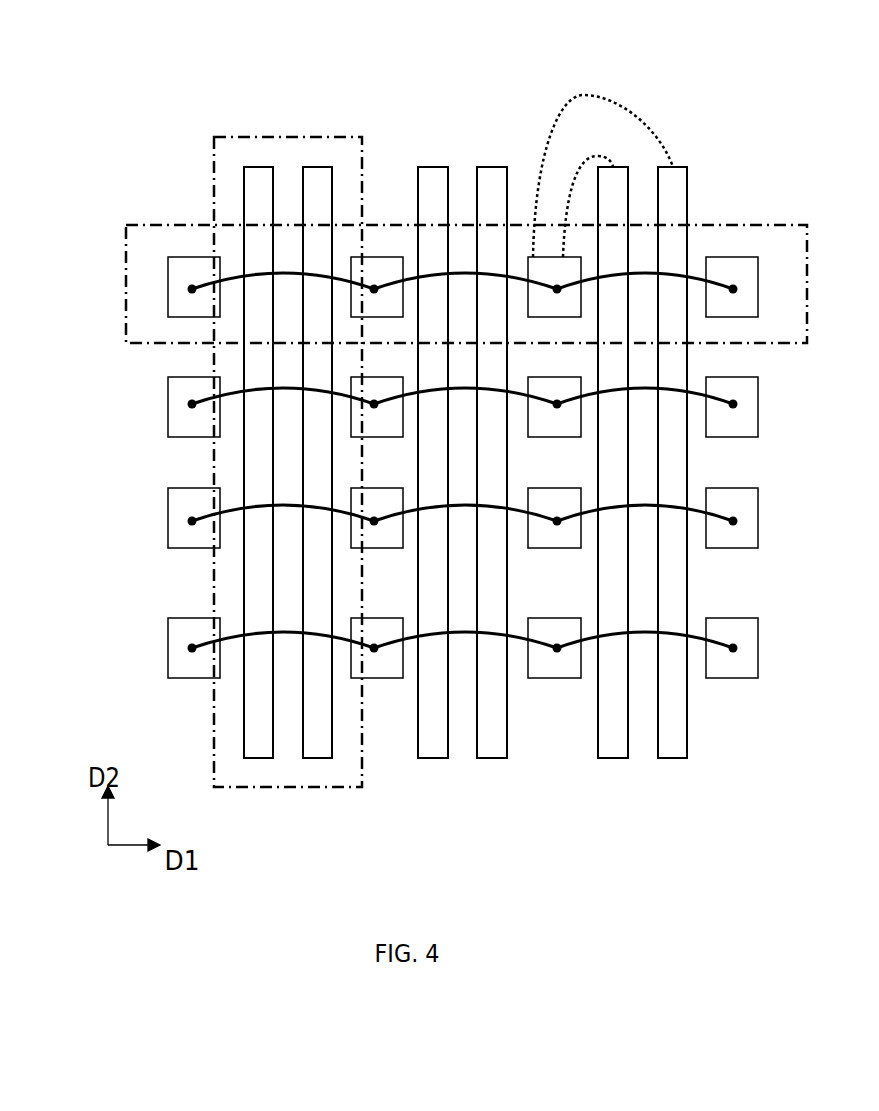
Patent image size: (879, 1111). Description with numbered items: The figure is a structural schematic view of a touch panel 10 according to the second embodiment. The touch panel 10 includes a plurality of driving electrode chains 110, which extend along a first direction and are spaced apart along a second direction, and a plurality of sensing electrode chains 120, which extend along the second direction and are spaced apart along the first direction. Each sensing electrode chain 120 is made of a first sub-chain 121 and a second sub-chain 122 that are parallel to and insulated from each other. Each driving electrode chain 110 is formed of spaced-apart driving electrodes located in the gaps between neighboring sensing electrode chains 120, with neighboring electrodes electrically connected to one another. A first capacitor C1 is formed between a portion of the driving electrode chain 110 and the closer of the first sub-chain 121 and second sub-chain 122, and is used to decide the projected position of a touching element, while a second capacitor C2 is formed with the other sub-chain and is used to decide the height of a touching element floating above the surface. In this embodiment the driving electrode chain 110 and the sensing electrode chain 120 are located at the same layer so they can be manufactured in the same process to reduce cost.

The touch panel 10 is at (480, 29).
The driving electrode chain 110 is at (125, 270).
The sensing electrode chain 120 is at (215, 180).
The first sub-chain 121 is at (263, 168).
The second sub-chain 122 is at (318, 168).
The first capacitor C1 is at (587, 196).
The second capacitor C2 is at (603, 161).